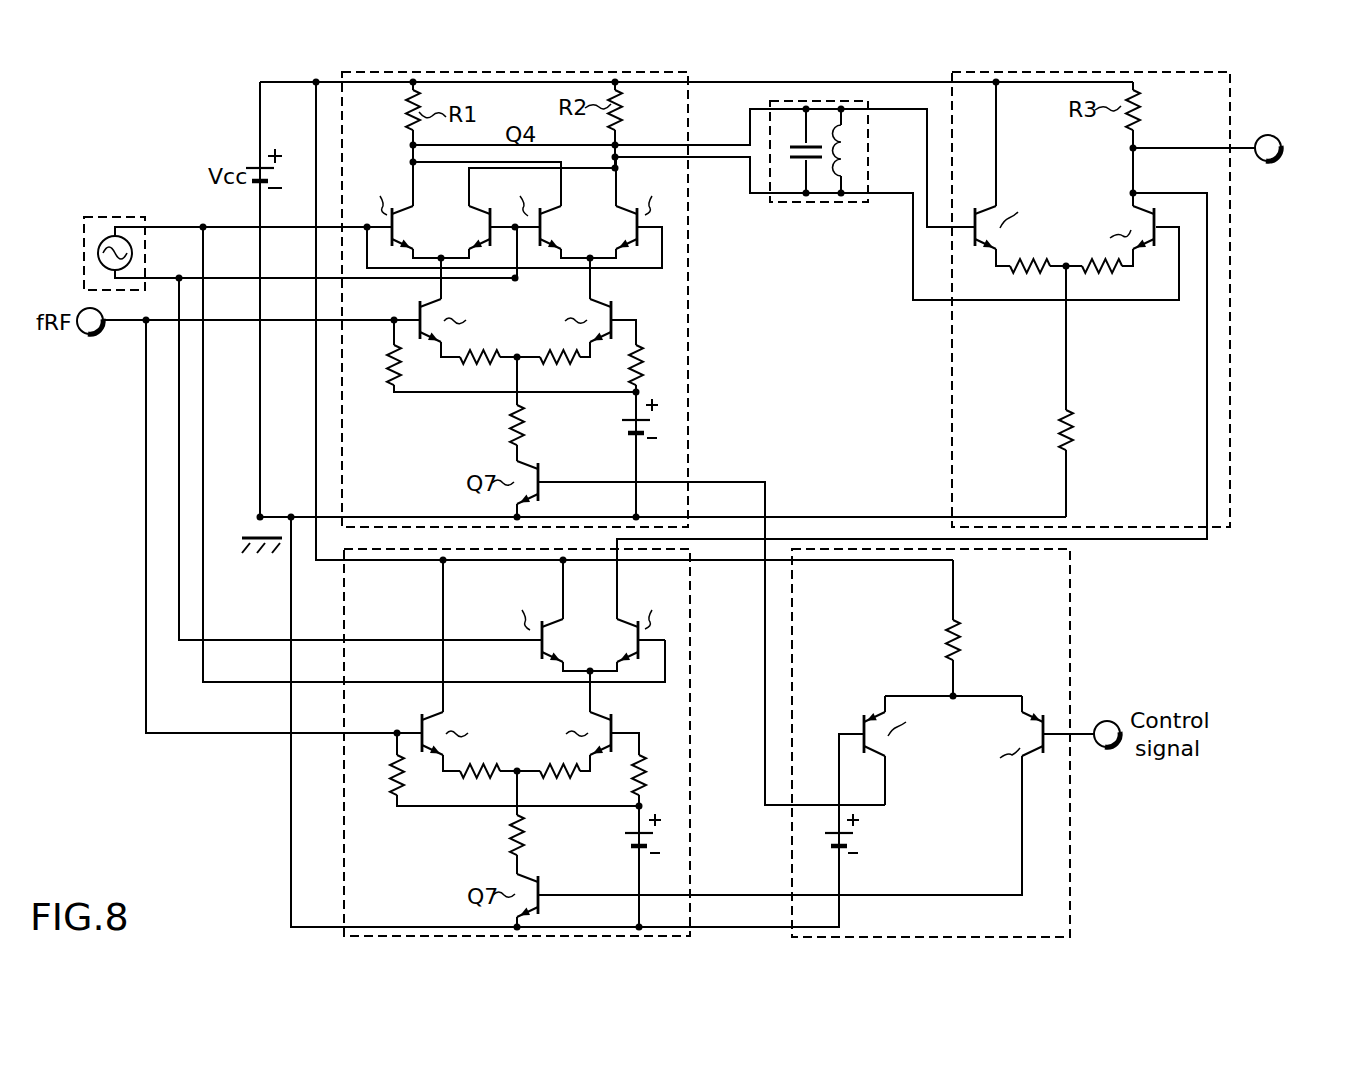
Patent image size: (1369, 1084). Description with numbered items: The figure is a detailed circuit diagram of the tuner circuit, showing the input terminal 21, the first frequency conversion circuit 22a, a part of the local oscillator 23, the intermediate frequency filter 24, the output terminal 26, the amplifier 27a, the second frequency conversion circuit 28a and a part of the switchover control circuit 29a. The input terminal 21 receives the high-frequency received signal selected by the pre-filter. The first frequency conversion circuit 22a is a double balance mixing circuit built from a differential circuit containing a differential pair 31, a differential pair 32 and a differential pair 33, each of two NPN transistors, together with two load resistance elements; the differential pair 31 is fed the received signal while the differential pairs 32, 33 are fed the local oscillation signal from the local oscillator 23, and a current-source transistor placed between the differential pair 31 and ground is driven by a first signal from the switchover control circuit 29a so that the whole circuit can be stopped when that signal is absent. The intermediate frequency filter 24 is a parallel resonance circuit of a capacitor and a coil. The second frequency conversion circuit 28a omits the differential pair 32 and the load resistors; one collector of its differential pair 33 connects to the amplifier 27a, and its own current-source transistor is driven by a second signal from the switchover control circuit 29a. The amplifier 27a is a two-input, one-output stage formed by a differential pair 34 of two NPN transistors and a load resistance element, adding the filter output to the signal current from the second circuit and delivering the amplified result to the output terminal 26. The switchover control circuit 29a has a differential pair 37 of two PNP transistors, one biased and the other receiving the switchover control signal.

The input terminal 21 is at (88, 337).
The local oscillator 23 is at (133, 215).
The intermediate frequency filter 24 is at (820, 206).
The output terminal 26 is at (1269, 133).
The first frequency conversion circuit 22a is at (689, 300).
The amplifier 27a is at (952, 367).
The second frequency conversion circuit 28a is at (692, 602).
The switchover control circuit 29a is at (1071, 602).
The differential pair 31 is at (514, 350).
The differential pair 32 is at (435, 224).
The differential pair 33 is at (586, 224).
The differential pair 34 is at (1089, 218).
The differential pair 37 is at (951, 781).